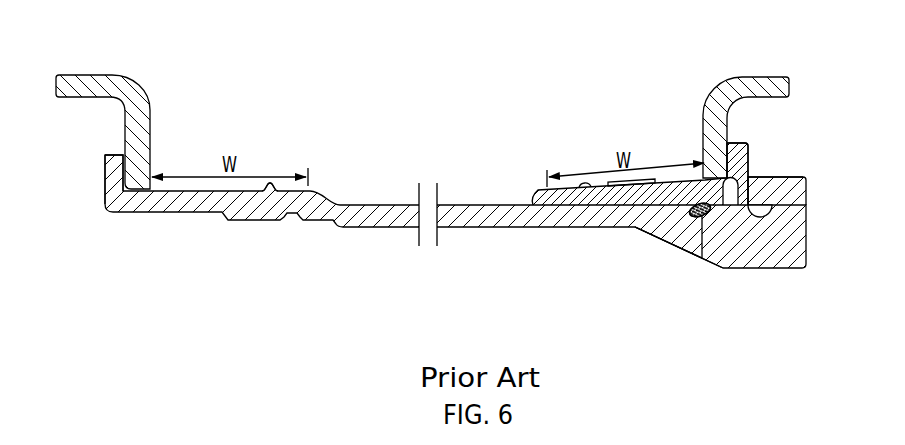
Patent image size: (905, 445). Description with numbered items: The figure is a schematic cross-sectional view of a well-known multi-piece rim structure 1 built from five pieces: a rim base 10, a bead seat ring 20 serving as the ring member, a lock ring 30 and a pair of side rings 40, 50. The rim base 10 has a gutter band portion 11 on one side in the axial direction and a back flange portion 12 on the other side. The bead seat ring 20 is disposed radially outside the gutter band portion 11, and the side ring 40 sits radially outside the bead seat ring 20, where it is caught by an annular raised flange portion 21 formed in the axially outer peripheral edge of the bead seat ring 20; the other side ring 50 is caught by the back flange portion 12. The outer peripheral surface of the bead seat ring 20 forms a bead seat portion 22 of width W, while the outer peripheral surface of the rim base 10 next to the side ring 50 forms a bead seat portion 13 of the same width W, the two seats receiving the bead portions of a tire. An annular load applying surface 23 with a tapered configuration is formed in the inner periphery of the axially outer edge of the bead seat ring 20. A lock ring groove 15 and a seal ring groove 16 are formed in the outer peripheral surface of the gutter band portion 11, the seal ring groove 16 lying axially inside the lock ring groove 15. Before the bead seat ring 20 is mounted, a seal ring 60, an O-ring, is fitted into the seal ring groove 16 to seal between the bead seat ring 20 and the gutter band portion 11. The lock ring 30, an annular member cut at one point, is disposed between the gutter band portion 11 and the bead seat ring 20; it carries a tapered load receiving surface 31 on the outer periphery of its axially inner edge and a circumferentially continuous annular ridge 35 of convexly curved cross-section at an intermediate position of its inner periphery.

The multi-piece rim structure 1 is at (561, 148).
The rim base 10 is at (485, 203).
The gutter band portion 11 is at (693, 236).
The back flange portion 12 is at (107, 193).
The bead seat portion 13 is at (272, 188).
The lock ring groove 15 is at (760, 213).
The seal ring groove 16 is at (649, 231).
The bead seat ring 20 is at (652, 176).
The annular raised flange portion 21 is at (735, 145).
The bead seat portion 22 is at (583, 193).
The annular load applying surface 23 is at (774, 178).
The lock ring 30 is at (805, 166).
The load receiving surface 31 is at (727, 210).
The annular ridge 35 is at (783, 217).
The side ring 40 is at (742, 77).
The side ring 50 is at (113, 75).
The seal ring 60 is at (699, 217).